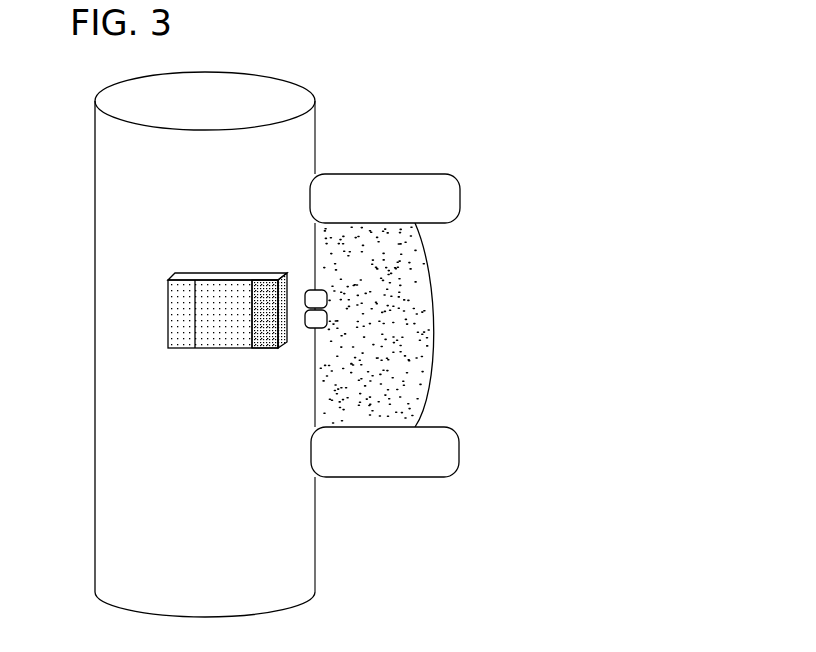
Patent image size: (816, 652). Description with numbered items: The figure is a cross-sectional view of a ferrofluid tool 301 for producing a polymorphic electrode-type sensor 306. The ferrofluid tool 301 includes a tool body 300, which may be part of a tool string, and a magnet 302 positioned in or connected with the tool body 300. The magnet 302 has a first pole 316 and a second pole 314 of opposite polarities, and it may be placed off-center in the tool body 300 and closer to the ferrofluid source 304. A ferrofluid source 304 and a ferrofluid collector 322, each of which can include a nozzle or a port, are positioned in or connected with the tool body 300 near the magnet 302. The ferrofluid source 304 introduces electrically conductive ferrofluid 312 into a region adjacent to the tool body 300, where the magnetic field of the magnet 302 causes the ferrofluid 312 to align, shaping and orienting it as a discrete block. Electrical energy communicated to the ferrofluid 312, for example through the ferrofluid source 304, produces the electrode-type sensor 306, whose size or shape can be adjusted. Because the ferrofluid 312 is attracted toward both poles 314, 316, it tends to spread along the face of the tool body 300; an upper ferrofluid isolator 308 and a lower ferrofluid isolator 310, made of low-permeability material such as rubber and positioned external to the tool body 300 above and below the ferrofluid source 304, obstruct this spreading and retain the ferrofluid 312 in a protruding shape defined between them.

The tool body 300 is at (300, 130).
The ferrofluid tool 301 is at (284, 41).
The magnet 302 is at (168, 317).
The ferrofluid source 304 is at (311, 320).
The polymorphic electrode-type sensor 306 is at (436, 345).
The first ferrofluid isolator 308 is at (423, 180).
The second ferrofluid isolator 310 is at (408, 467).
The ferrofluid 312 is at (416, 292).
The second pole 314 is at (167, 312).
The first pole 316 is at (262, 320).
The ferrofluid collector 322 is at (309, 290).